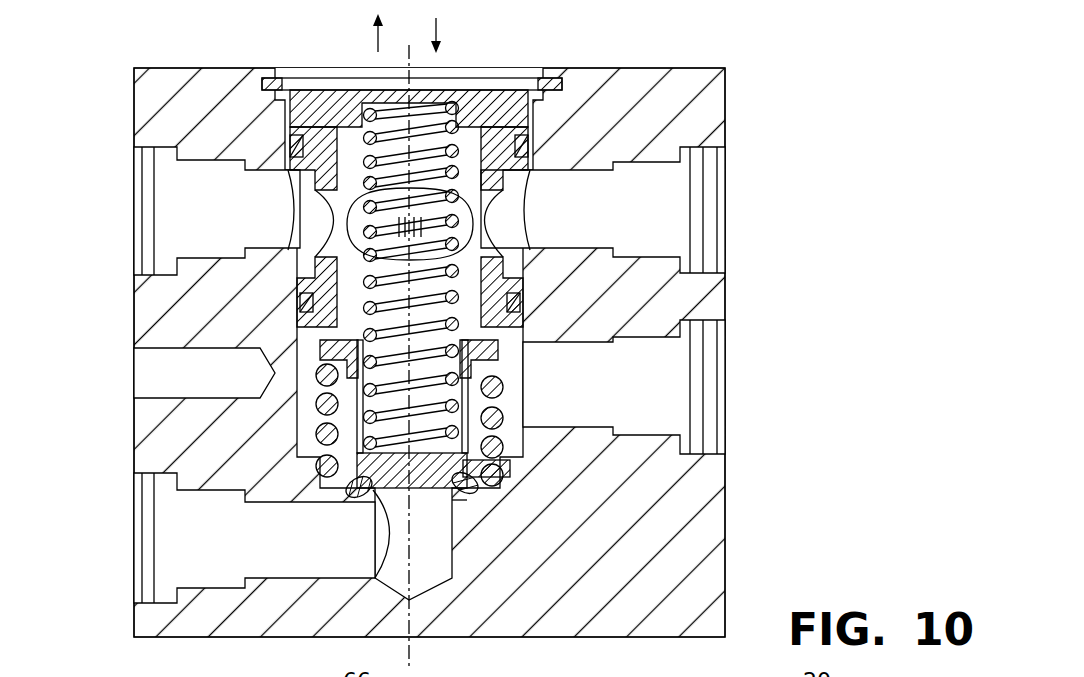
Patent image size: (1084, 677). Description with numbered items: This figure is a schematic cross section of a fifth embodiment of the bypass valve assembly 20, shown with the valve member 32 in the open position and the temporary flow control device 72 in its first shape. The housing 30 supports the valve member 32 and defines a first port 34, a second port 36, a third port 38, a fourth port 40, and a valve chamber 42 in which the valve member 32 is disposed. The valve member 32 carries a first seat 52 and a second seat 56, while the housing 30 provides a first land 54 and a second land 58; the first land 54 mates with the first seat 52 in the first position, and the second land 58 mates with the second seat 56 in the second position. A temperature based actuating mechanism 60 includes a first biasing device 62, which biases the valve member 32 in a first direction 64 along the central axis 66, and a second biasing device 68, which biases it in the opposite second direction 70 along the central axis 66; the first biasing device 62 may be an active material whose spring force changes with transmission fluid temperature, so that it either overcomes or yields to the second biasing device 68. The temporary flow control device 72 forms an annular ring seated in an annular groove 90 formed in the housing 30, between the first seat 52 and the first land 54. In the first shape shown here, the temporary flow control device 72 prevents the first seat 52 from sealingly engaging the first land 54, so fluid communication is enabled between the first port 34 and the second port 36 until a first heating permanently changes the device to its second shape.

The bypass valve assembly 20 is at (696, 56).
The housing 30 is at (707, 103).
The valve member 32 is at (495, 402).
The first port 34 is at (692, 322).
The second port 36 is at (147, 605).
The third port 38 is at (150, 158).
The fourth port 40 is at (712, 152).
The valve chamber 42 is at (520, 335).
The first seat 52 is at (363, 498).
The first land 54 is at (372, 500).
The second seat 56 is at (350, 345).
The second land 58 is at (343, 303).
The temperature based actuating mechanism 60 is at (474, 268).
The first biasing device 62 is at (345, 415).
The first direction 64 is at (377, 42).
The central axis 66 is at (412, 637).
The second biasing device 68 is at (463, 160).
The second direction 70 is at (438, 28).
The temporary flow control device 72 is at (446, 494).
The annular groove 90 is at (500, 461).